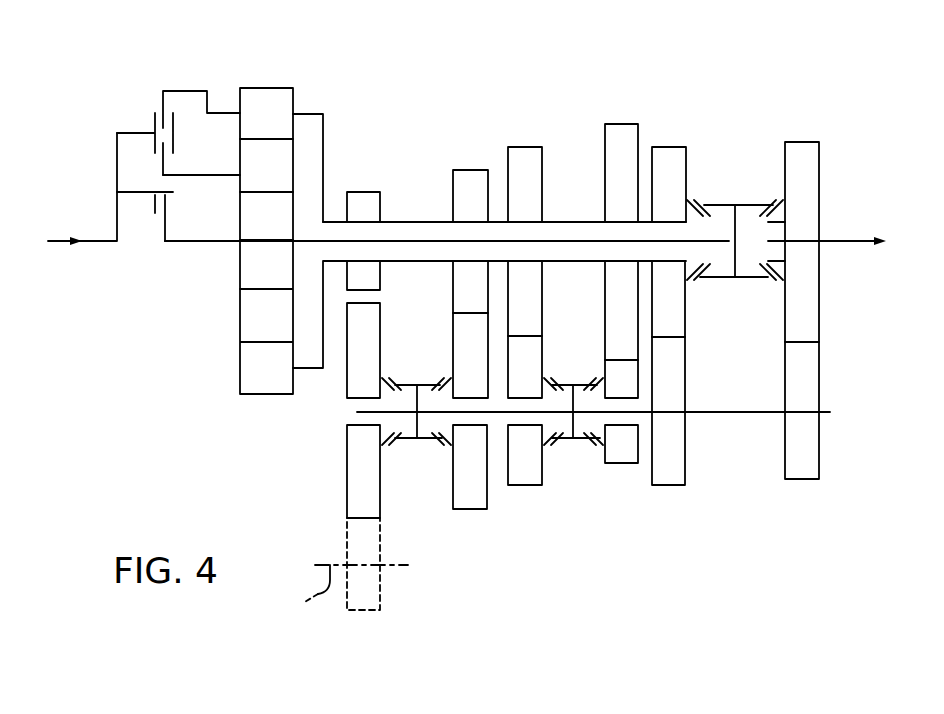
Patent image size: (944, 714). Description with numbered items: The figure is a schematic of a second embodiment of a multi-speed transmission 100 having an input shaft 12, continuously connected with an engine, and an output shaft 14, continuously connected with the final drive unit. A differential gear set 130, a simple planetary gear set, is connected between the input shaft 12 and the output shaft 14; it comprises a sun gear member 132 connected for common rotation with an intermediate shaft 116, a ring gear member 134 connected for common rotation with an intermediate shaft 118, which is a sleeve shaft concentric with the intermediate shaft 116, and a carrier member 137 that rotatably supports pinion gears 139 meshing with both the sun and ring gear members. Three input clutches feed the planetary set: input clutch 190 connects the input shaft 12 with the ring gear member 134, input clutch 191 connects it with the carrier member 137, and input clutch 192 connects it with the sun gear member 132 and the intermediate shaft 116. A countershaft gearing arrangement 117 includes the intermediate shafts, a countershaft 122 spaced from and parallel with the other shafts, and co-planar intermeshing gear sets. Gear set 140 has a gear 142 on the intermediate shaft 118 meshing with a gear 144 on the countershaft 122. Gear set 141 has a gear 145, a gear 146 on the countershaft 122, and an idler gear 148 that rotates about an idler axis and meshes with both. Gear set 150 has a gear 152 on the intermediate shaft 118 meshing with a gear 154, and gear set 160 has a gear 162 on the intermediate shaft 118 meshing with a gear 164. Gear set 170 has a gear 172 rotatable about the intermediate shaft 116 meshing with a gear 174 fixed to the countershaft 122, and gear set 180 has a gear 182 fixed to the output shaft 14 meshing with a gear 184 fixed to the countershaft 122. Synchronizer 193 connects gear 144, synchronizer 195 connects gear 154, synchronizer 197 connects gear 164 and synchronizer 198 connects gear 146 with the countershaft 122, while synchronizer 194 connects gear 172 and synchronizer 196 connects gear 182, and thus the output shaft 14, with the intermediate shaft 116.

The multi-speed transmission 100 is at (475, 337).
The countershaft gearing arrangement 117 is at (497, 337).
The input shaft 12 is at (82, 224).
The output shaft 14 is at (831, 262).
The intermediate shaft 116 is at (198, 278).
The intermediate shaft 118 is at (447, 268).
The countershaft 122 is at (593, 442).
The differential gear set 130 is at (245, 257).
The sun gear member 132 is at (218, 278).
The ring gear member 134 is at (266, 138).
The carrier member 137 is at (201, 203).
The pinion gears 139 is at (337, 168).
The gear set 140 is at (484, 424).
The gear set 141 is at (366, 613).
The gear 142 is at (481, 173).
The gear 144 is at (485, 491).
The gear 145 is at (384, 184).
The gear 146 is at (339, 389).
The idler gear 148 is at (398, 568).
The co-planar gear set 150 is at (545, 416).
The gear 152 is at (539, 165).
The gear 154 is at (545, 341).
The gear set 160 is at (619, 401).
The gear 162 is at (642, 157).
The gear 164 is at (606, 464).
The gear set 170 is at (702, 411).
The gear 172 is at (690, 169).
The gear 174 is at (702, 374).
The gear set 180 is at (837, 355).
The gear 182 is at (837, 242).
The gear 184 is at (837, 445).
The input clutch 190 is at (152, 114).
The input clutch 191 is at (116, 182).
The input clutch 192 is at (137, 255).
The synchronizer 193 is at (416, 473).
The synchronizer 194 is at (736, 209).
The synchronizer 195 is at (573, 487).
The synchronizer 196 is at (735, 305).
The synchronizer 197 is at (573, 376).
The synchronizer 198 is at (416, 376).